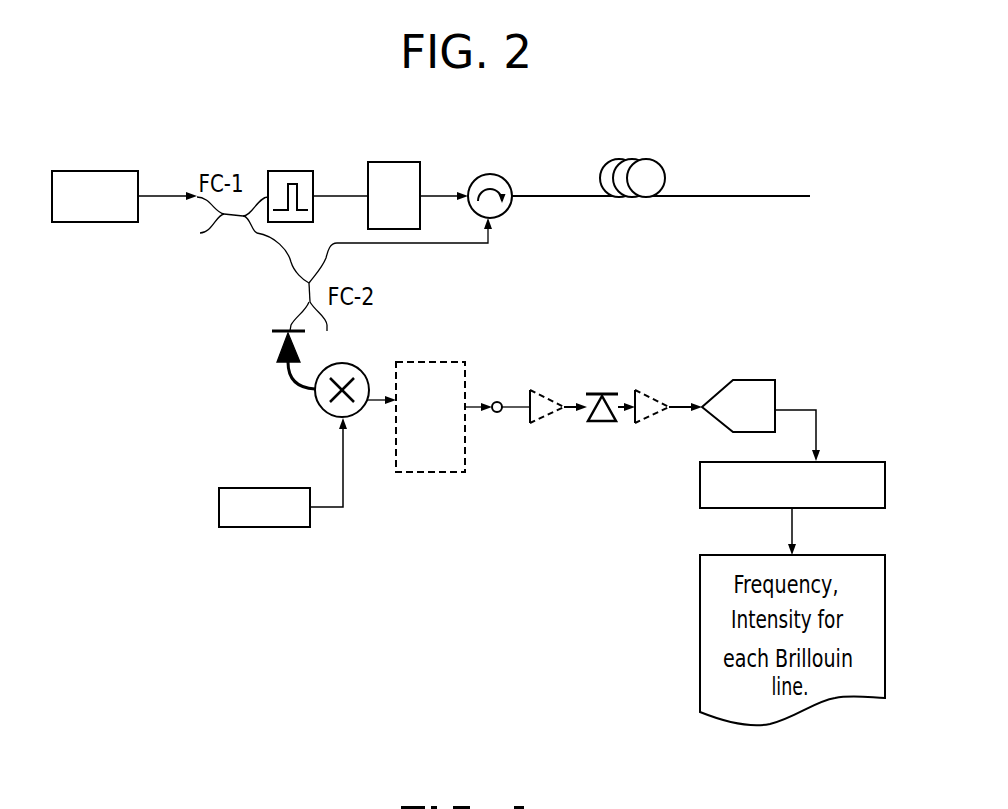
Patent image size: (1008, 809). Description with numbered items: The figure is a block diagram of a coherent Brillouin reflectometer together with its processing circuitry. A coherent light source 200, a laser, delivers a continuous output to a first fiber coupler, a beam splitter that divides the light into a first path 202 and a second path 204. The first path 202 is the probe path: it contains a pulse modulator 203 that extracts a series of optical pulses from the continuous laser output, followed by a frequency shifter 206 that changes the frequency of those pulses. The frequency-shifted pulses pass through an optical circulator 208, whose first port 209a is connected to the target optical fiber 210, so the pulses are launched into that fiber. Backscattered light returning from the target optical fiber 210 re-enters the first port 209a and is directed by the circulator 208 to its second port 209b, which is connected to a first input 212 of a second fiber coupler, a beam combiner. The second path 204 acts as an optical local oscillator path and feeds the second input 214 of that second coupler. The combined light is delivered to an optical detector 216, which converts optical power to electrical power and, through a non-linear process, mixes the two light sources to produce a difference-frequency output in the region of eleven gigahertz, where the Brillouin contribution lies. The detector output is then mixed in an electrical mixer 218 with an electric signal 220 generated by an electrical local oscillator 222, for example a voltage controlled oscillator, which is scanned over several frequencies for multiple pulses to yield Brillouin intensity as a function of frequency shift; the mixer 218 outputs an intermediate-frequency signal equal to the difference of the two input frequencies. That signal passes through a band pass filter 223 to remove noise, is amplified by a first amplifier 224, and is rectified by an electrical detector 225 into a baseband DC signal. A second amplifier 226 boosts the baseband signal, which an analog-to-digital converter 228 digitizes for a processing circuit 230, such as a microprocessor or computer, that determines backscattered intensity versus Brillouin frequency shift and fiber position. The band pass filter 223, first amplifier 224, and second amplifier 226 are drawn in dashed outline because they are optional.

The coherent light source 200 is at (70, 222).
The first path 202 is at (259, 184).
The pulse modulator 203 is at (308, 171).
The second path 204 is at (251, 241).
The frequency shifter 206 is at (393, 162).
The optical circulator 208 is at (490, 174).
The first port 209a is at (514, 196).
The second port 209b is at (498, 217).
The target optical fiber 210 is at (719, 184).
The first input 212 is at (328, 264).
The second input 214 is at (305, 272).
The optical detector 216 is at (266, 354).
The electrical mixer 218 is at (343, 363).
The electric signal 220 is at (345, 482).
The electrical local oscillator 222 is at (262, 527).
The band pass filter 223 is at (420, 362).
The first amplifier 224 is at (552, 395).
The electrical detector 225 is at (604, 374).
The second amplifier 226 is at (653, 395).
The analog-to-digital converter 228 is at (752, 379).
The processing circuit 230 is at (885, 475).